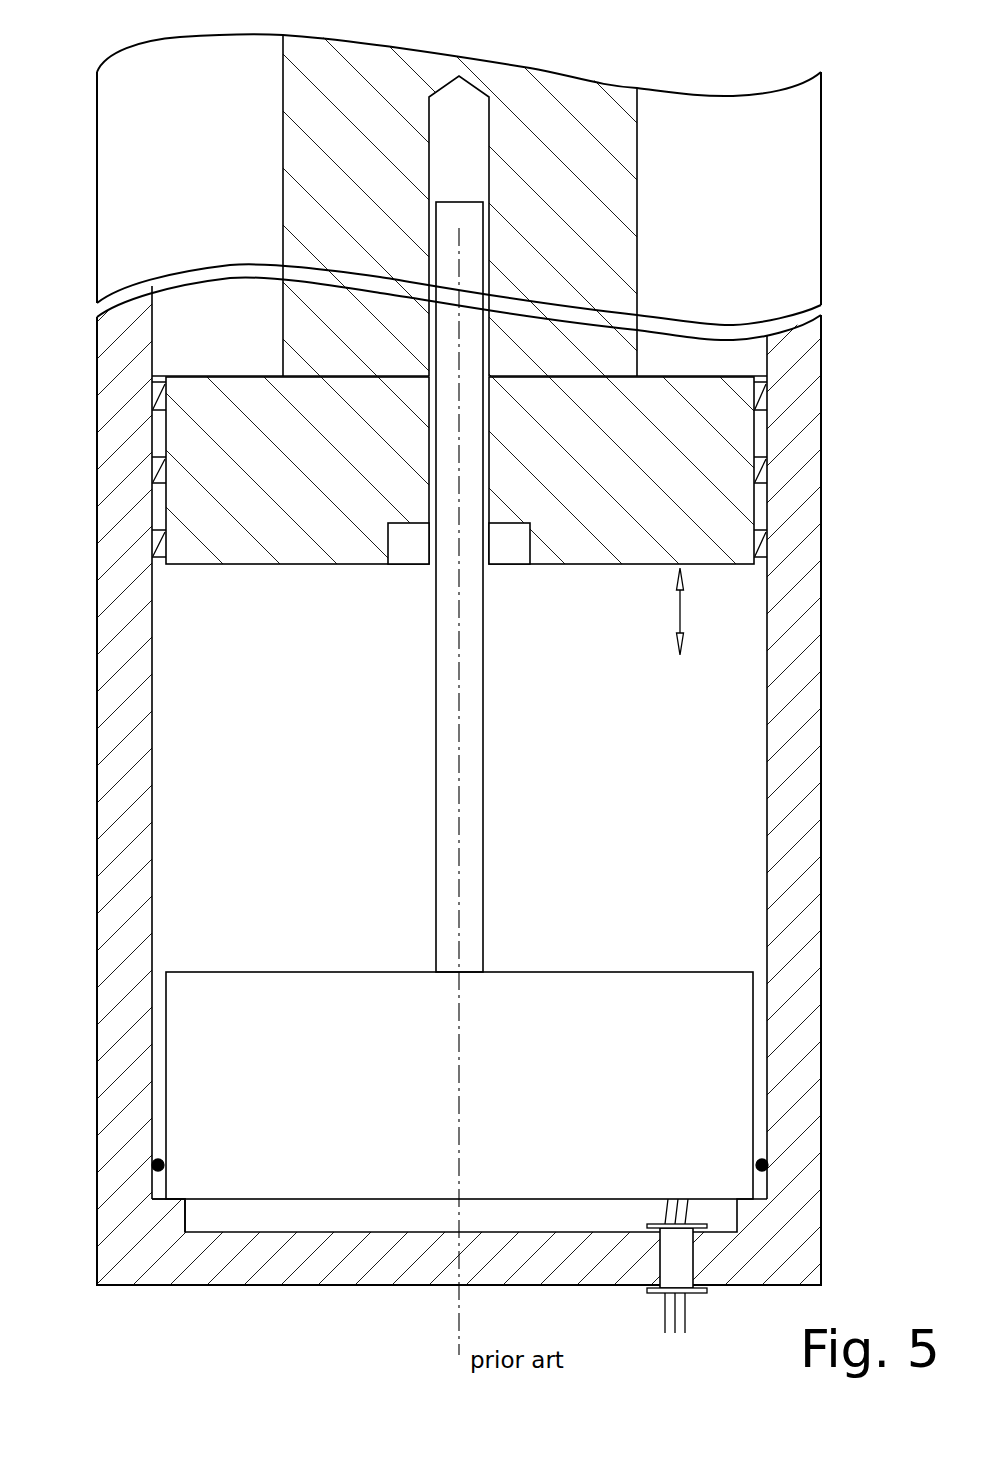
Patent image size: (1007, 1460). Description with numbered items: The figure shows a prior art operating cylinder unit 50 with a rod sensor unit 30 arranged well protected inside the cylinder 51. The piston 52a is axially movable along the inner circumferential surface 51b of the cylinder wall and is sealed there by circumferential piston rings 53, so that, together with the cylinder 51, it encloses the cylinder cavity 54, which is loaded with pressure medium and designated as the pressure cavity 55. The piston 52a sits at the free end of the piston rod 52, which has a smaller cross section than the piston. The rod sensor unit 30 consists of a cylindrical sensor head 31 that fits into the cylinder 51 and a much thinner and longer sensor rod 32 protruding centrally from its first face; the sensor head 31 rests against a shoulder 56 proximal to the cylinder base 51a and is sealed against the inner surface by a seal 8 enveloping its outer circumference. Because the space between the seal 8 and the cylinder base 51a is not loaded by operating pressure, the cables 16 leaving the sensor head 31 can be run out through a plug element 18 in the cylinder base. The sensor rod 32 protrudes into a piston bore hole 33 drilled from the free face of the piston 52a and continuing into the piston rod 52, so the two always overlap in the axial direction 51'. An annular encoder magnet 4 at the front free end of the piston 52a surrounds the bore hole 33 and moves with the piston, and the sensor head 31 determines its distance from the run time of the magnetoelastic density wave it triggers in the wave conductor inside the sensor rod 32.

The operating cylinder unit 50 is at (843, 62).
The cylinder 51 is at (495, 678).
The cylinder base 51a is at (328, 1285).
The inner circumferential surface of the cylinder wall 51b is at (768, 583).
The axial direction 51' is at (621, 470).
The piston rod 52 is at (460, 205).
The piston 52a is at (297, 470).
The piston rings 53 is at (757, 543).
The cylinder cavity 54 is at (714, 611).
The pressure cavity 55 is at (459, 340).
The shoulder 56 is at (182, 1201).
The rod sensor unit 30 is at (522, 938).
The sensor head 31 is at (459, 1085).
The sensor rod 32 is at (472, 785).
The piston bore hole 33 is at (459, 226).
The encoder magnet 4 is at (459, 544).
The seal 8 is at (153, 1168).
The electrical lines 16 is at (683, 1200).
The plug element 18 is at (678, 1259).